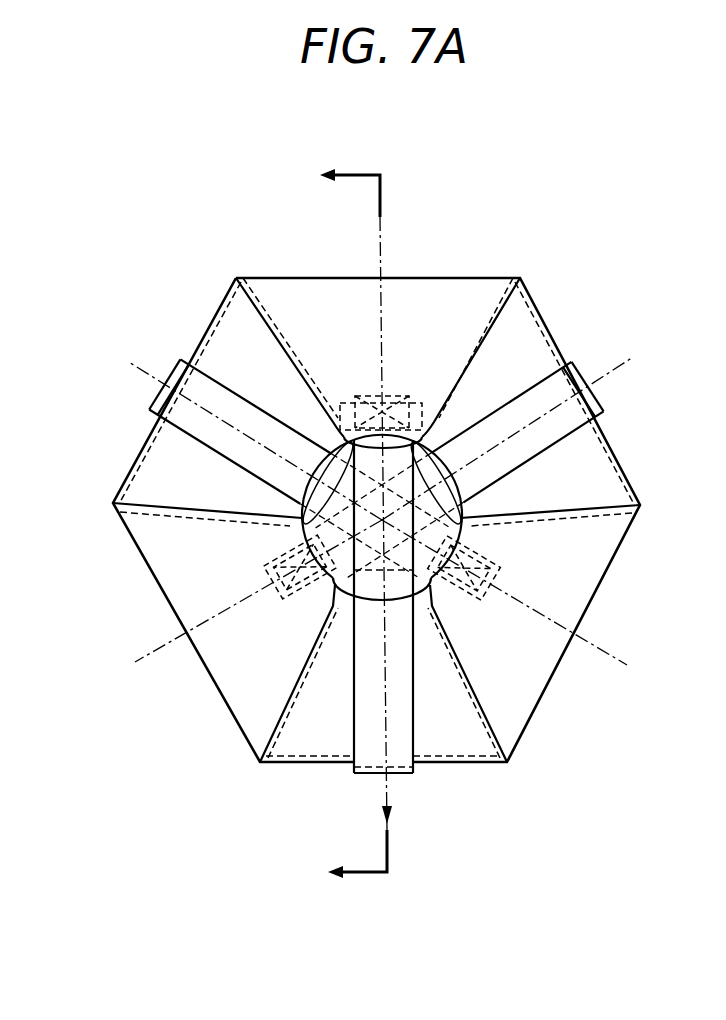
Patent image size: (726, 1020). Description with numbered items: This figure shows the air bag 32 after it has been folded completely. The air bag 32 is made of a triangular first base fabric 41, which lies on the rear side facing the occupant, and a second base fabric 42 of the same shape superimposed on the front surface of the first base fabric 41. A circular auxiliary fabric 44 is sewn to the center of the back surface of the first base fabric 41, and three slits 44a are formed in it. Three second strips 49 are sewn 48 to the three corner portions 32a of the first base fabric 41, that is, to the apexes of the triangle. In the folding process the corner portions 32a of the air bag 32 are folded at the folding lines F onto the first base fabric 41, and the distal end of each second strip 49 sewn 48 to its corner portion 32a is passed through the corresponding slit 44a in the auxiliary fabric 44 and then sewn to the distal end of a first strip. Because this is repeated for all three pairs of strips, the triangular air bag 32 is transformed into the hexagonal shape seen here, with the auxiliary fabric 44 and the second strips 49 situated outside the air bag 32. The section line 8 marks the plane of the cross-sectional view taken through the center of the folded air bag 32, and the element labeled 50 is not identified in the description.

The section line 8- 8 is at (356, 528).
The air bag 32 is at (572, 299).
The corner portions 32a is at (318, 290).
The first base fabric 41 is at (587, 460).
The second base fabric 42 is at (530, 688).
The auxiliary fabric 44 is at (303, 446).
The slits 44a is at (302, 503).
The sewn portion 48 is at (402, 392).
The second strips 49 is at (233, 410).
The central ball joint 50 is at (150, 440).
The folding lines F is at (438, 277).